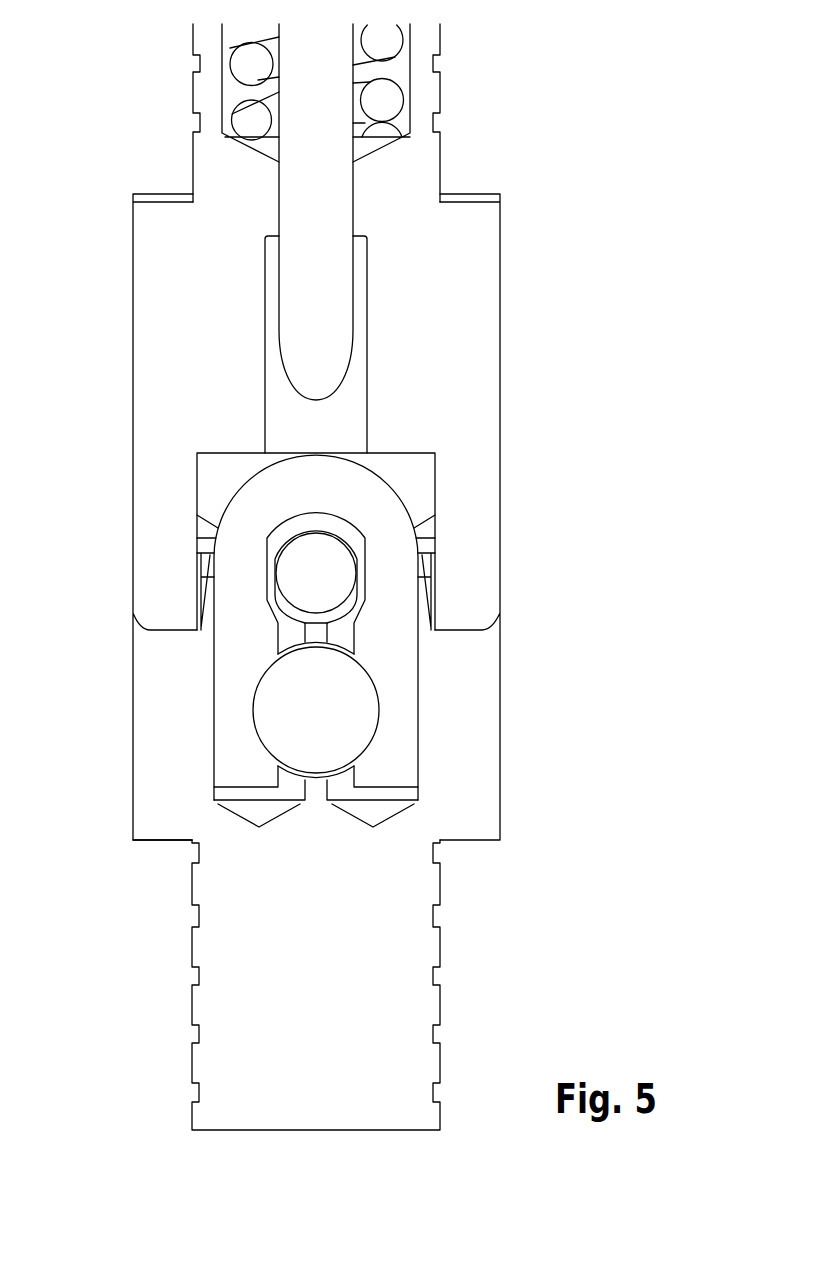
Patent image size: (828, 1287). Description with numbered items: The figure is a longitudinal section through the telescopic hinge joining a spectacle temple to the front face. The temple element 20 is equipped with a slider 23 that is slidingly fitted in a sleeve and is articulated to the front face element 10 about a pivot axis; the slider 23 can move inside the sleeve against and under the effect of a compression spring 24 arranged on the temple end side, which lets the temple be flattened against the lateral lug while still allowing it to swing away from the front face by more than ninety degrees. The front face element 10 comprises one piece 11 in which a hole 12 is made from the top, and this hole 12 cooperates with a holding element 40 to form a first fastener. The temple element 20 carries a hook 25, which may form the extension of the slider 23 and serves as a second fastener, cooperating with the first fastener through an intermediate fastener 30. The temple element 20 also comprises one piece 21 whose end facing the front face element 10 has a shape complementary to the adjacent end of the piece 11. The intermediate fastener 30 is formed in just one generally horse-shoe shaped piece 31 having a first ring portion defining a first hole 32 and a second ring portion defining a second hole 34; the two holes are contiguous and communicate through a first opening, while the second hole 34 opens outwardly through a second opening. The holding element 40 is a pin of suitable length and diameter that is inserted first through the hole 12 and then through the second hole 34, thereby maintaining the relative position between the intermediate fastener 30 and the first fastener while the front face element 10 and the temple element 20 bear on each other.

The front face element 10 is at (191, 944).
The piece 11 is at (175, 801).
The hole 12 is at (263, 722).
The temple element 20 is at (487, 257).
The piece 21 is at (453, 327).
The slider 23 is at (337, 202).
The spring 24 is at (388, 103).
The hook 25 is at (335, 582).
The intermediate fastener 30 is at (257, 640).
The piece 31 is at (357, 498).
The first hole 32 is at (335, 530).
The second hole 34 is at (293, 767).
The holding element 40 is at (337, 710).